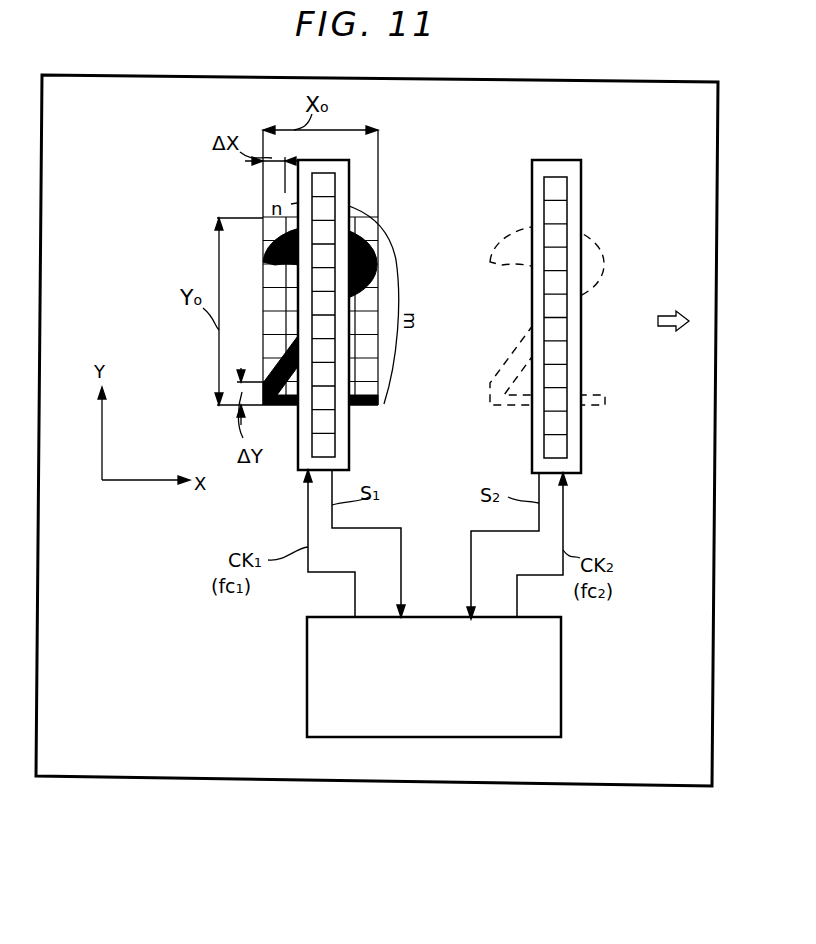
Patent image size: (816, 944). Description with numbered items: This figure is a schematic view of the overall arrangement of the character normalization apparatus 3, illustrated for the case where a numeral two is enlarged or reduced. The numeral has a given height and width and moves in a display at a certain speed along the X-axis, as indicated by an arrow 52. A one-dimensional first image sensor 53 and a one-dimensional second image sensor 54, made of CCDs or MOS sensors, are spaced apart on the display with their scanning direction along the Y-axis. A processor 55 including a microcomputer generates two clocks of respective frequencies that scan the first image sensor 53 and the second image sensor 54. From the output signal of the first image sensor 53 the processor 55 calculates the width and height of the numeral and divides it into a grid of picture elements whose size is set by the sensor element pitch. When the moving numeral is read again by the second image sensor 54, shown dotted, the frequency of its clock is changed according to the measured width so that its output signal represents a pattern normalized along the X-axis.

The character normalization apparatus 3 is at (97, 770).
The arrow 52 is at (666, 316).
The first image sensor 53 is at (349, 172).
The second image sensor 54 is at (567, 166).
The processor 55 is at (562, 678).